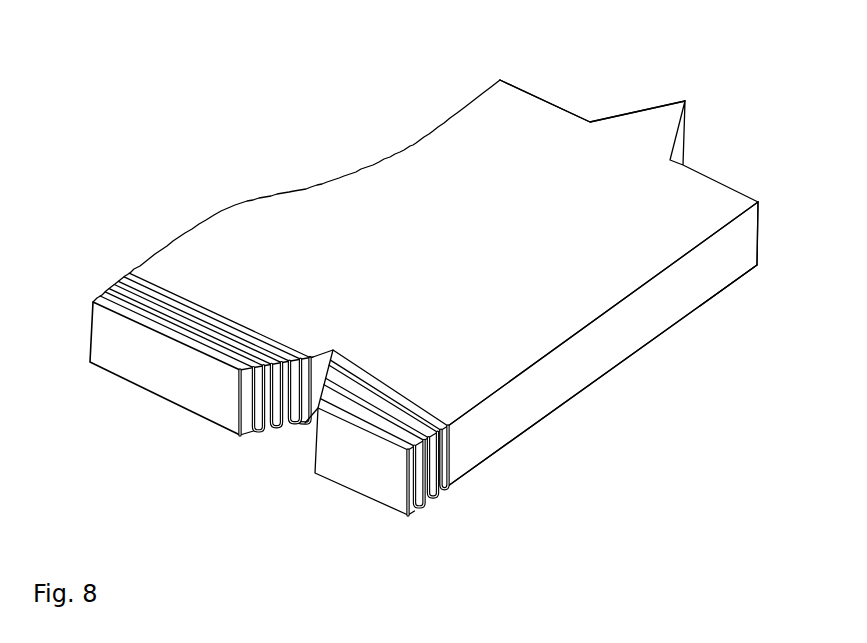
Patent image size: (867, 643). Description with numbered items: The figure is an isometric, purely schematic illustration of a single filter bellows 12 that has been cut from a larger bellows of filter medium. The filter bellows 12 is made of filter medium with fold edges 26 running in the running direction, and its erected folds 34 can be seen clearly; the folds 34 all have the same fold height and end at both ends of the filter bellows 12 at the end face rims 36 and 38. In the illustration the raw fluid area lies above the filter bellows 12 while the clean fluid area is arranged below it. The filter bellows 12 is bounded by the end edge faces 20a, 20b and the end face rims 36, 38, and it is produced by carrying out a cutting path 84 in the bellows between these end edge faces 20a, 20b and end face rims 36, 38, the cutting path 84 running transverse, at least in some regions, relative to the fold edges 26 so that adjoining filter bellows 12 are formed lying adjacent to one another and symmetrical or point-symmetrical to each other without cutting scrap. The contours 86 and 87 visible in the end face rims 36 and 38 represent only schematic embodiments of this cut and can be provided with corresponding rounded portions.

The filter bellows 12 is at (548, 370).
The end edge face 20a is at (655, 318).
The end edge face 20b is at (222, 208).
The fold edges 26 is at (221, 331).
The folds 34 is at (395, 410).
The end face rim 36 is at (142, 371).
The end face rim 38 is at (568, 110).
The cutting path 84 is at (595, 338).
The contour 86 is at (673, 147).
The contour 87 is at (317, 367).